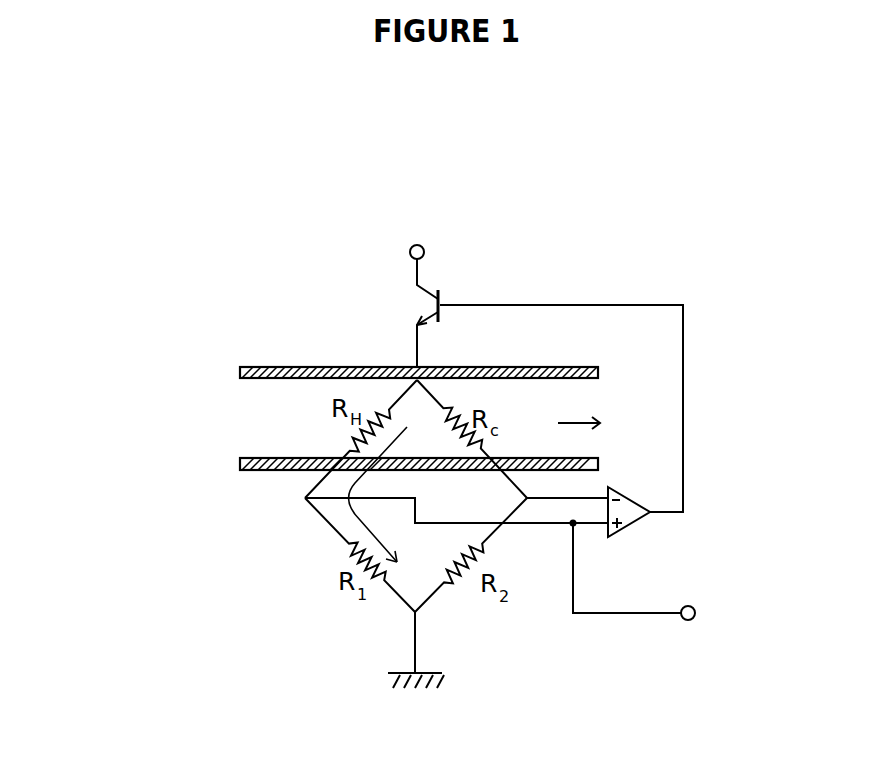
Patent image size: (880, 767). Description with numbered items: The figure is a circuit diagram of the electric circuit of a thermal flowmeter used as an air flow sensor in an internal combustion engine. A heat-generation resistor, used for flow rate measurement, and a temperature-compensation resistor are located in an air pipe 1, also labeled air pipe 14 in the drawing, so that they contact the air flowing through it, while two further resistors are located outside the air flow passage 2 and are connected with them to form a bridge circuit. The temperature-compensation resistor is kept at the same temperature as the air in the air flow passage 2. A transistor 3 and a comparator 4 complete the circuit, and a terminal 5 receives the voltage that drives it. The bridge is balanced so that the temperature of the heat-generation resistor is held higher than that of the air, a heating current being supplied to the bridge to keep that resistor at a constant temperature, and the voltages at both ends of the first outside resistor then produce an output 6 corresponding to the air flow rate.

The air pipe 1 is at (258, 366).
The air flow passage 2 is at (280, 438).
The transistor 3 is at (440, 290).
The comparator 4 is at (630, 507).
The terminal 5 is at (425, 248).
The output 6 is at (688, 620).
The air pipe 14 is at (331, 409).